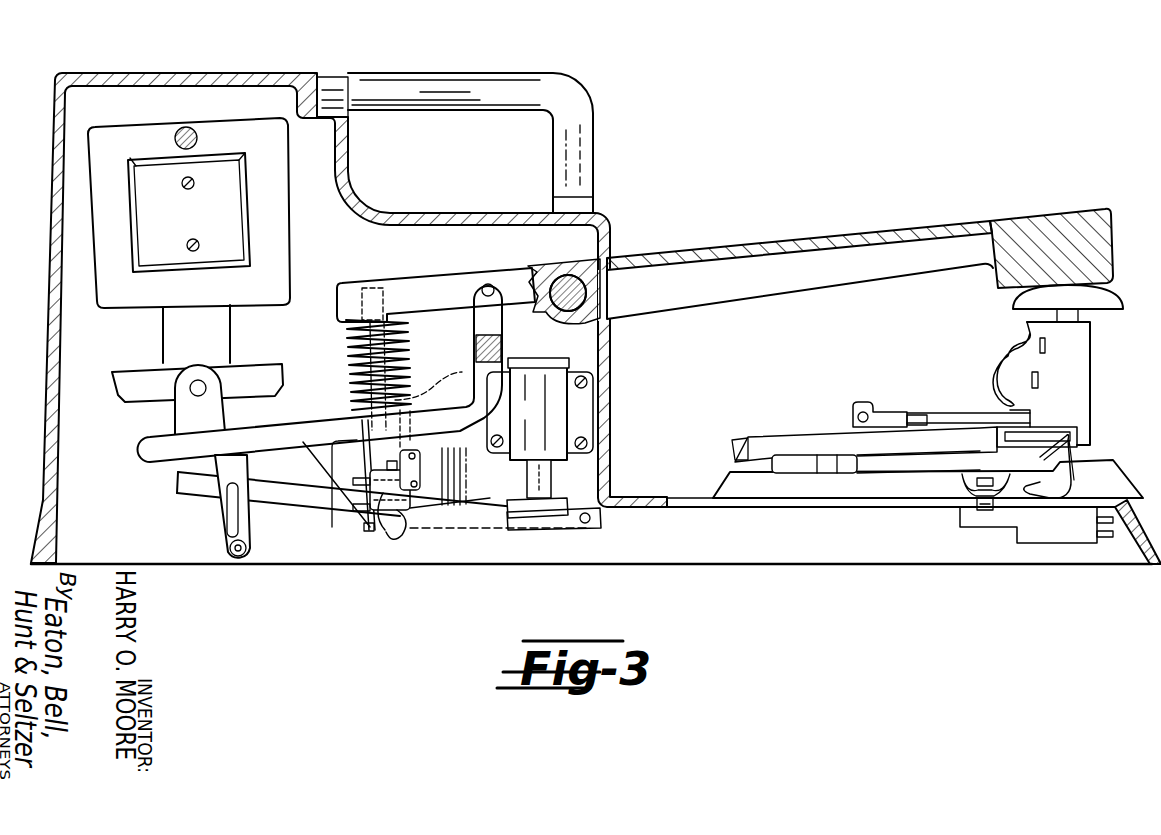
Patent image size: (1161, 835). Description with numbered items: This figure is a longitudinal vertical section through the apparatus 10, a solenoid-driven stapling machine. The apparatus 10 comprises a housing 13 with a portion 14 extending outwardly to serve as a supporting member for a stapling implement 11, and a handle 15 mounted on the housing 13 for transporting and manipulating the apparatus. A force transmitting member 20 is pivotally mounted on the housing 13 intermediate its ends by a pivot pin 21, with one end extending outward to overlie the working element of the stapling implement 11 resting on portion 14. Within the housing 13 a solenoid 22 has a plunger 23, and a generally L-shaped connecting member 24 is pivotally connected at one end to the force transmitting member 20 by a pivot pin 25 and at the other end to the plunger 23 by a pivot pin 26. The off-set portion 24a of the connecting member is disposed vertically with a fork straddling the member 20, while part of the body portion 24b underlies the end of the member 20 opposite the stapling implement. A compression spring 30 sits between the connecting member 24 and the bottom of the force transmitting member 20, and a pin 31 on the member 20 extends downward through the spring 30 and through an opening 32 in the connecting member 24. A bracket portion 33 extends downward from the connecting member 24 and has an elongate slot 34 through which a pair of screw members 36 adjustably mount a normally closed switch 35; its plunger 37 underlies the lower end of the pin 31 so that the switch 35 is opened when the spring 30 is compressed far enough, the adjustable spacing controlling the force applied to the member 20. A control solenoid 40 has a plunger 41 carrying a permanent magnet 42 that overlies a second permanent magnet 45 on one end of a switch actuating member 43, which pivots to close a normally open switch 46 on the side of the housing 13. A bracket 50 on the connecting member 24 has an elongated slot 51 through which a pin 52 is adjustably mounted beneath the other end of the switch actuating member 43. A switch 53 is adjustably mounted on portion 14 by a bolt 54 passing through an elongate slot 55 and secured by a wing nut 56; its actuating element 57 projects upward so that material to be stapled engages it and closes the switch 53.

The apparatus 10 is at (628, 159).
The stapling implement 11 is at (994, 366).
The housing 13 is at (211, 73).
The portion 14 is at (648, 493).
The handle 15 is at (553, 80).
The force transmitting member 20 is at (822, 234).
The pivot pin 21 is at (566, 273).
The solenoid 22 is at (288, 243).
The plunger 23 is at (230, 330).
The connecting member 24 is at (320, 350).
The off-set portion 24a is at (478, 344).
The body portion 24b is at (292, 426).
The pivot pin 25 is at (488, 286).
The pivot pin 26 is at (192, 394).
The compression spring 30 is at (345, 340).
The pin 31 is at (412, 357).
The opening 32 is at (440, 400).
The bracket portion 33 is at (366, 535).
The elongate slot 34 is at (358, 462).
The normally closed switch 35 is at (395, 530).
The screw members 36 is at (408, 480).
The plunger 37 is at (414, 456).
The control solenoid 40 is at (542, 360).
The plunger 41 is at (545, 475).
The permanent magnet 42 is at (558, 505).
The switch actuating member 43 is at (302, 508).
The permanent magnet 45 is at (572, 532).
The switch 46 is at (364, 432).
The bracket 50 is at (225, 503).
The elongated slot 51 is at (228, 515).
The pin 52 is at (232, 545).
The switch 53 is at (1030, 545).
The bolt 54 is at (985, 512).
The elongate slot 55 is at (846, 507).
The wing nut 56 is at (962, 486).
The actuating element 57 is at (1075, 453).